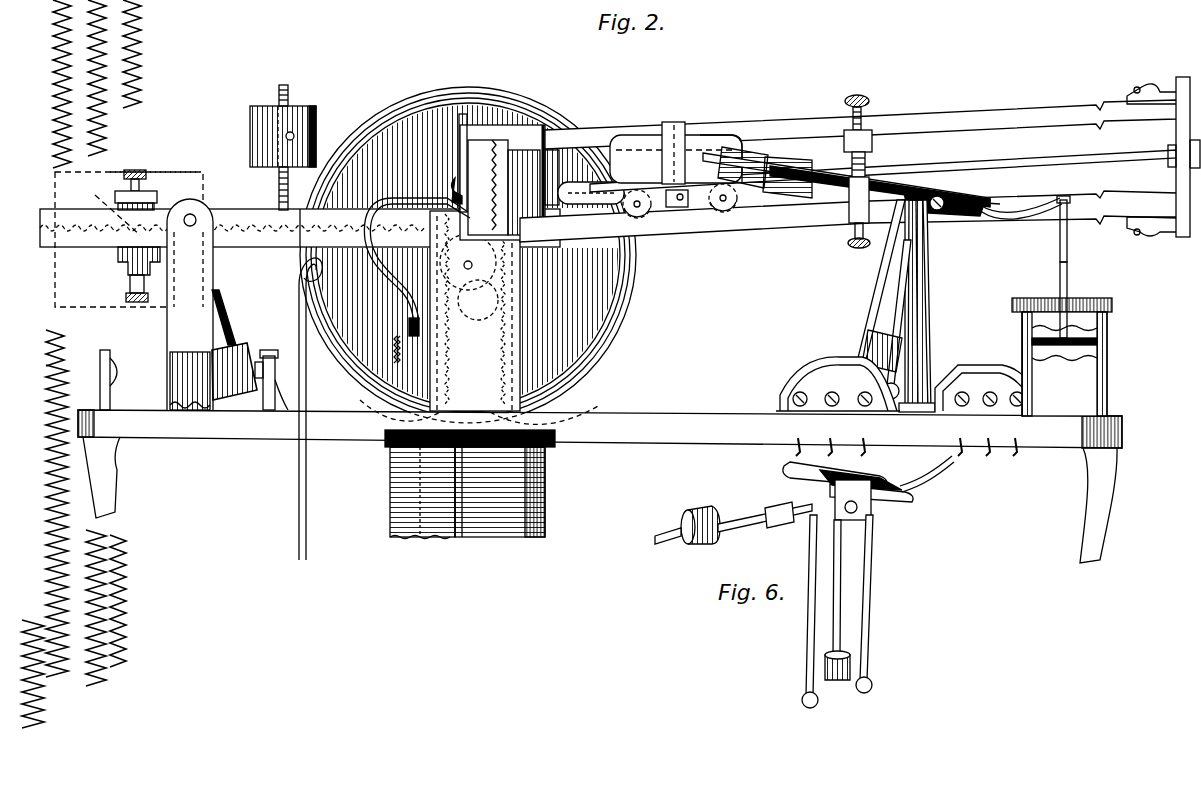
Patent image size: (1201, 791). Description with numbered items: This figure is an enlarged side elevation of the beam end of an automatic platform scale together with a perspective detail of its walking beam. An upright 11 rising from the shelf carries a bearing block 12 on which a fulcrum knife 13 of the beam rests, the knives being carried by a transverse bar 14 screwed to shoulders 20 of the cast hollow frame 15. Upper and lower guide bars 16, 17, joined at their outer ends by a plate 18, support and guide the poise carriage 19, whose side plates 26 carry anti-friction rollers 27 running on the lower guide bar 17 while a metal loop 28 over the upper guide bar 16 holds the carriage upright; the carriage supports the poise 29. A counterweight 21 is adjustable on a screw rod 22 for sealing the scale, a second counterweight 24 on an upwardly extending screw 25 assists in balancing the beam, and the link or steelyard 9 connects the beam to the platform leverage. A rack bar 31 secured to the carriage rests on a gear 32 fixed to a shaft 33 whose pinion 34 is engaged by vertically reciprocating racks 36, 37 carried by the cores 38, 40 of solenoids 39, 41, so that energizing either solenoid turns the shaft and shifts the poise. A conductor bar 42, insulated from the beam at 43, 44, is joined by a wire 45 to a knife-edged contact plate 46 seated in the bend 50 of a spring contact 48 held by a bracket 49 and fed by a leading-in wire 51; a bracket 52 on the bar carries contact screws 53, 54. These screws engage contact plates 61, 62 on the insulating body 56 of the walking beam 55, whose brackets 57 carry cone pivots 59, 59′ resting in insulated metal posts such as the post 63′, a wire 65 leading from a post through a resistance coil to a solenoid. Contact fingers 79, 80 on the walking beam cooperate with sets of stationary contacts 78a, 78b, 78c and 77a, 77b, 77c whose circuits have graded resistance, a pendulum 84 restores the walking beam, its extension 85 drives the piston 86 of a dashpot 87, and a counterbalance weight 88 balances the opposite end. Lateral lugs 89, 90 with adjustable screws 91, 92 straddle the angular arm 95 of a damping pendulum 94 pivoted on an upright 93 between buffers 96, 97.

In FIG. 2, the link or steelyard 9 is at (297, 500).
In FIG. 2, the upright 11 is at (520, 335).
In FIG. 2, the bearing blocks 12 is at (432, 213).
In FIG. 2, the fulcrum knives 13 is at (480, 205).
In FIG. 2, the transverse bar 14 is at (470, 195).
In FIG. 2, the cast hollow frame 15 is at (340, 210).
In FIG. 2, the upper guide bar 16 is at (952, 112).
In FIG. 2, the lower guide bar 17 is at (790, 228).
In FIG. 2, the plate 18 is at (1178, 128).
In FIG. 2, the poise carriage 19 is at (740, 136).
In FIG. 2, the shoulders 20 is at (463, 130).
In FIG. 2, the counterweight 21 is at (108, 172).
In FIG. 2, the screw rod 22 is at (262, 250).
In FIG. 2, the second counterweight 24 is at (308, 108).
In FIG. 2, the screw 25 is at (283, 85).
In FIG. 2, the side plates 26 is at (638, 150).
In FIG. 2, the anti-friction rollers 27 is at (648, 218).
In FIG. 2, the metal strip or loop 28 is at (678, 125).
In FIG. 2, the poise 29 is at (794, 158).
In FIG. 2, the rack bar 31 is at (232, 212).
In FIG. 2, the gear 32 is at (520, 280).
In FIG. 2, the shaft 33 is at (467, 270).
In FIG. 2, the pinion 34 is at (480, 322).
In FIG. 2, the rack 36 is at (400, 415).
In FIG. 2, the rack 37 is at (545, 418).
In FIG. 2, the core 38 is at (392, 490).
In FIG. 2, the solenoid 39 is at (390, 532).
In FIG. 2, the core 40 is at (512, 537).
In FIG. 2, the solenoid 41 is at (470, 537).
In FIG. 2, the conductor bar 42 is at (1056, 157).
In FIG. 2, the insulating support 43 is at (584, 177).
In FIG. 2, the insulating support 44 is at (1190, 170).
In FIG. 2, the wire 45 is at (505, 125).
In FIG. 2, the contact plate 46 is at (452, 185).
In FIG. 2, the spring contact member 48 is at (378, 268).
In FIG. 2, the bracket 49 is at (412, 336).
In FIG. 2, the bend 50 is at (428, 196).
In FIG. 2, the leading-in wire 51 is at (385, 352).
In FIG. 2, the bracket 52 is at (872, 162).
In FIG. 2, the contact screw 53 is at (862, 96).
In FIG. 2, the contact screw 54 is at (848, 244).
In FIG. 2, the walking beam 55 is at (988, 200).
In FIG. 2, the central body portion 56 is at (1030, 210).
In FIG. 6, the central body portion 56 is at (890, 476).
In FIG. 2, the bracket 57 is at (930, 188).
In FIG. 6, the bracket 57 is at (820, 468).
In FIG. 2, the cone pivot 59′ is at (945, 197).
In FIG. 6, the cone pivot 59 is at (800, 483).
In FIG. 6, the contact plate 61 is at (800, 500).
In FIG. 6, the contact plate 62 is at (778, 518).
In FIG. 2, the metal post 63′ is at (930, 300).
In FIG. 2, the wire 65 is at (936, 411).
In FIG. 2, the stationary contact 77a is at (880, 405).
In FIG. 2, the stationary contact 77b is at (835, 372).
In FIG. 2, the stationary contact 77c is at (790, 400).
In FIG. 2, the stationary contact 78a is at (966, 406).
In FIG. 2, the stationary contact 78b is at (996, 406).
In FIG. 2, the stationary contact 78c is at (1030, 412).
In FIG. 2, the contact finger 79 is at (932, 238).
In FIG. 6, the contact finger 79 is at (868, 545).
In FIG. 2, the contact finger 80 is at (868, 265).
In FIG. 6, the contact finger 80 is at (810, 540).
In FIG. 2, the pendulum 84 is at (880, 310).
In FIG. 2, the extension 85 is at (1058, 225).
In FIG. 2, the piston 86 is at (1100, 341).
In FIG. 2, the dashpot 87 is at (1110, 312).
In FIG. 2, the counterbalance weight 88 is at (762, 158).
In FIG. 2, the lateral lug 89 is at (150, 195).
In FIG. 2, the lateral lug 90 is at (125, 270).
In FIG. 2, the adjustable screw 91 is at (136, 170).
In FIG. 2, the adjustable screw 92 is at (140, 304).
In FIG. 2, the upright 93 is at (172, 345).
In FIG. 2, the pendulum 94 is at (222, 305).
In FIG. 2, the angular arm 95 is at (129, 239).
In FIG. 2, the buffer 96 is at (102, 375).
In FIG. 2, the buffer 97 is at (270, 350).